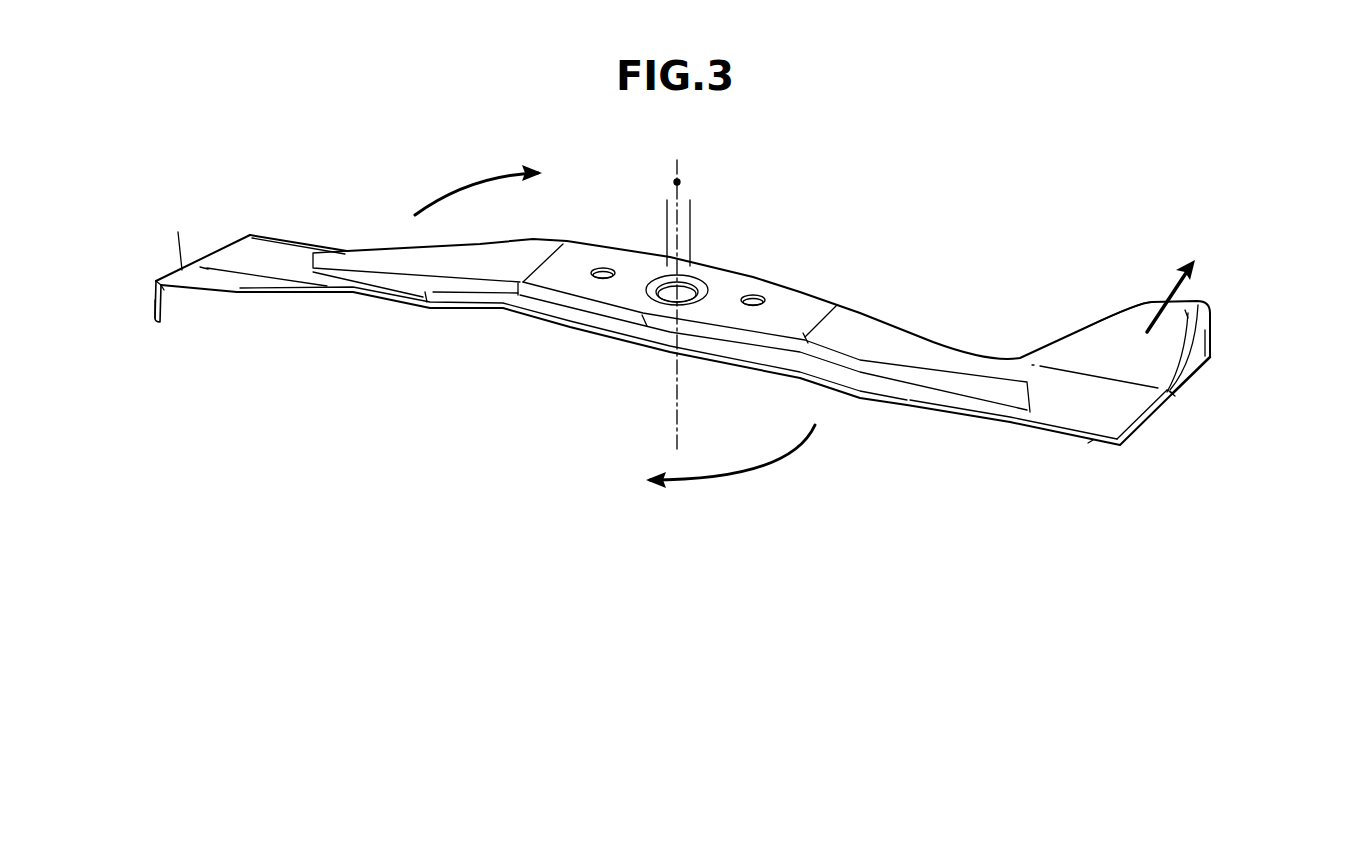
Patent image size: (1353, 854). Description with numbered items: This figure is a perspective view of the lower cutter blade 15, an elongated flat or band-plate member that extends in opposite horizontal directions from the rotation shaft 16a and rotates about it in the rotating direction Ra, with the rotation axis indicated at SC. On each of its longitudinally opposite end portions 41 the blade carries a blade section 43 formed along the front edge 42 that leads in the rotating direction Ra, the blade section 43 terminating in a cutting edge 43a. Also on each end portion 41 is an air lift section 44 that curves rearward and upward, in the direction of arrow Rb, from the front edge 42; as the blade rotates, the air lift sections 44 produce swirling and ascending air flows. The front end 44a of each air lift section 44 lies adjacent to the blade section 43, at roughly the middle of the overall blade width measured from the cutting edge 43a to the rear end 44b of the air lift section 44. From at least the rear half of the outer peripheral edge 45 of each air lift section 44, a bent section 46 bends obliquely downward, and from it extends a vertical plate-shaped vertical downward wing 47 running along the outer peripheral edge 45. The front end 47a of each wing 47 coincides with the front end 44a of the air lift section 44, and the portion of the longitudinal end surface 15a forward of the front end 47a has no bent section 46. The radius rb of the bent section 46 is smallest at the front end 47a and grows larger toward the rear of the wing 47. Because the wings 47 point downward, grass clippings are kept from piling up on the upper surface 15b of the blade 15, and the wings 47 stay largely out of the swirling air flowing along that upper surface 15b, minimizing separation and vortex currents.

The lower cutter blade 15 is at (275, 128).
The longitudinal end surface 15a is at (228, 240).
The upper surface 15b is at (985, 385).
The rotation shaft 16a is at (692, 237).
The longitudinally opposite end portion 41 is at (300, 272).
The front edge 42 is at (340, 248).
The blade section 43 is at (297, 250).
The cutting edge 43a is at (1093, 442).
The air lift section 44 is at (260, 288).
The front end of air lift section 44a is at (1170, 395).
The rear end of air lift section 44b is at (210, 292).
The outer peripheral edge 45 is at (181, 270).
The bent section 46 is at (158, 281).
The vertical downward wing 47 is at (155, 312).
The front end of vertical downward wing 47a is at (1172, 394).
The radius of bent section rb is at (163, 286).
The rotating direction Ra is at (615, 331).
The rearward and upward direction Rb is at (1180, 280).
The rotation center axis SC is at (680, 181).